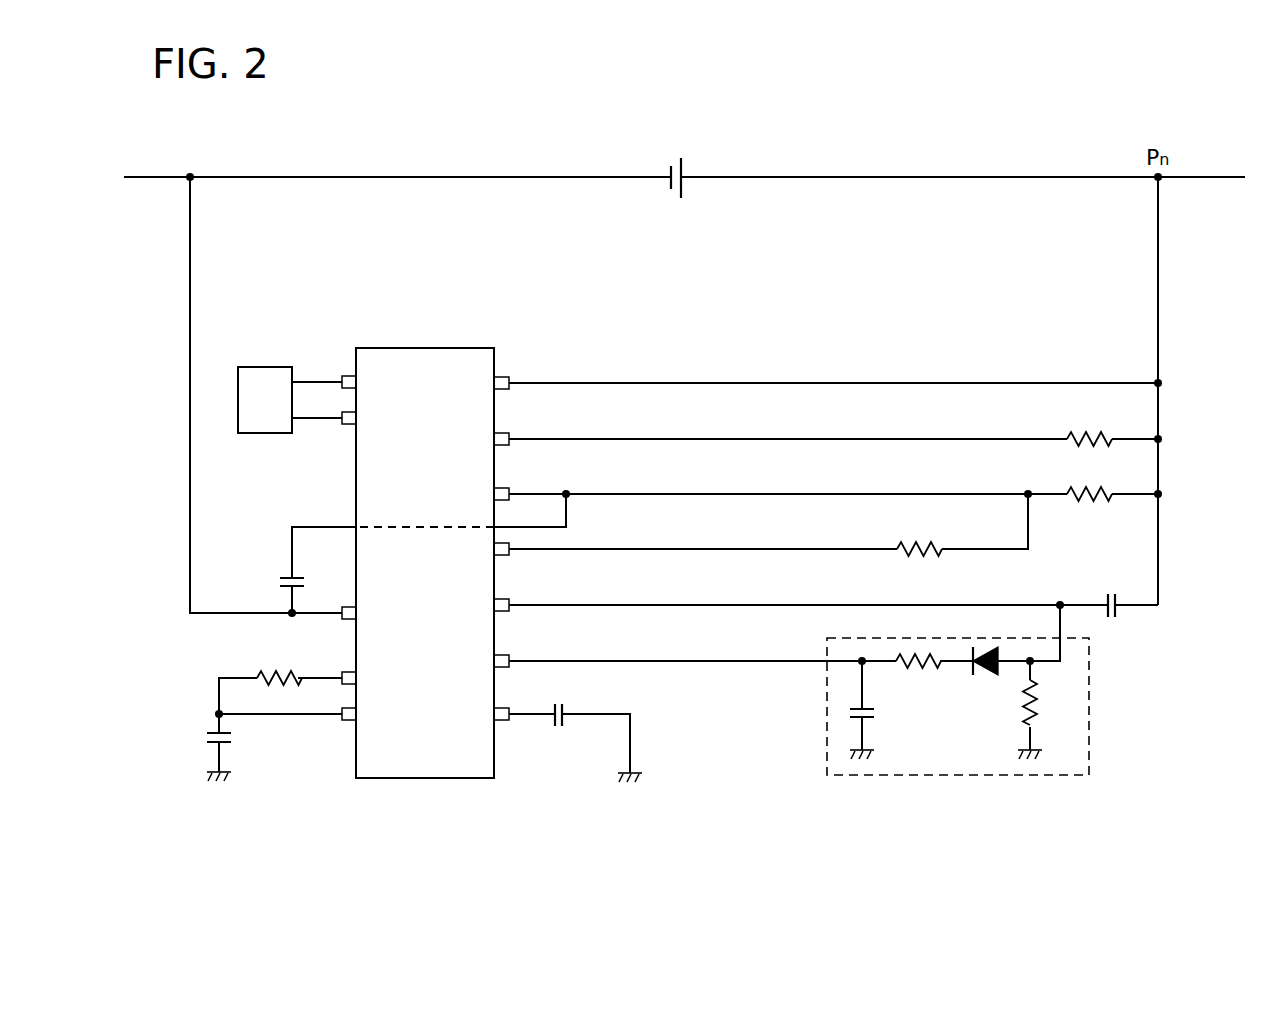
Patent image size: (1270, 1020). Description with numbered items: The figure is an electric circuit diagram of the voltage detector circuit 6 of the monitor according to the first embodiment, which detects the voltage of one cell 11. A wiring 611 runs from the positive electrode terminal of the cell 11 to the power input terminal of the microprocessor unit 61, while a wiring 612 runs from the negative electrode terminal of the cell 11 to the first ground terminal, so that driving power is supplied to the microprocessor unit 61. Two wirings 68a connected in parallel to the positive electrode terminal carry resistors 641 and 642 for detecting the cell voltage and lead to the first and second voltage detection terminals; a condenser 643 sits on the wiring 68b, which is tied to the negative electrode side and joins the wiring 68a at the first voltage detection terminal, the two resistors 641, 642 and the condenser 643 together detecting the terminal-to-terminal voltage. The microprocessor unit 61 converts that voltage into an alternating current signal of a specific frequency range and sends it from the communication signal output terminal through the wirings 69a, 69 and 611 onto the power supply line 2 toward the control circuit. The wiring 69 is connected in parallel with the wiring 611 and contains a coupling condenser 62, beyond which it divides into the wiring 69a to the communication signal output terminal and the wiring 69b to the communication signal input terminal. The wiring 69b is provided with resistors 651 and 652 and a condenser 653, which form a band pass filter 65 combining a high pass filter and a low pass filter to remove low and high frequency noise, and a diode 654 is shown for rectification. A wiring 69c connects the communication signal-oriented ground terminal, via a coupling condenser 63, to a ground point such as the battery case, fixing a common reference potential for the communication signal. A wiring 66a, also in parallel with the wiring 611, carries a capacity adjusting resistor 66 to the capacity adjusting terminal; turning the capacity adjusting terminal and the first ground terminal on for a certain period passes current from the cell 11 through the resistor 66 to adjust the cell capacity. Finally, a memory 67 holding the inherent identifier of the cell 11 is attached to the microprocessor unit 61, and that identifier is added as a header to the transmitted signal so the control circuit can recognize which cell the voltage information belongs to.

The power supply line 2 is at (962, 177).
The voltage detector circuit 6 is at (1093, 203).
The cell 11 is at (677, 156).
The microprocessor unit 61 is at (444, 348).
The coupling condenser 62 is at (1112, 622).
The coupling condenser 63 is at (558, 727).
The band pass filter 65 is at (1089, 754).
The capacity adjusting resistor 66 is at (1100, 427).
The wiring 66a is at (660, 439).
The memory 67 is at (268, 367).
The wiring 68a is at (665, 549).
The wiring 68b is at (320, 525).
The wiring 69 is at (1160, 606).
The wiring 69a is at (660, 605).
The wiring 69b is at (712, 663).
The wiring 69c is at (511, 720).
The wiring 611 is at (1158, 327).
The wiring 612 is at (190, 262).
The resistor 641 is at (1100, 487).
The resistor 642 is at (925, 556).
The condenser 643 is at (282, 580).
The resistor 651 is at (1042, 698).
The resistor 652 is at (915, 673).
The condenser 653 is at (852, 711).
The diode 654 is at (987, 678).